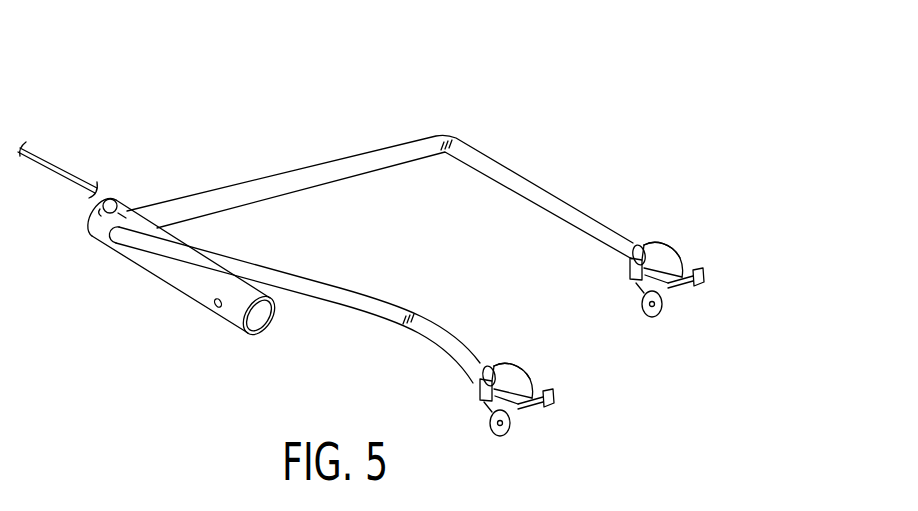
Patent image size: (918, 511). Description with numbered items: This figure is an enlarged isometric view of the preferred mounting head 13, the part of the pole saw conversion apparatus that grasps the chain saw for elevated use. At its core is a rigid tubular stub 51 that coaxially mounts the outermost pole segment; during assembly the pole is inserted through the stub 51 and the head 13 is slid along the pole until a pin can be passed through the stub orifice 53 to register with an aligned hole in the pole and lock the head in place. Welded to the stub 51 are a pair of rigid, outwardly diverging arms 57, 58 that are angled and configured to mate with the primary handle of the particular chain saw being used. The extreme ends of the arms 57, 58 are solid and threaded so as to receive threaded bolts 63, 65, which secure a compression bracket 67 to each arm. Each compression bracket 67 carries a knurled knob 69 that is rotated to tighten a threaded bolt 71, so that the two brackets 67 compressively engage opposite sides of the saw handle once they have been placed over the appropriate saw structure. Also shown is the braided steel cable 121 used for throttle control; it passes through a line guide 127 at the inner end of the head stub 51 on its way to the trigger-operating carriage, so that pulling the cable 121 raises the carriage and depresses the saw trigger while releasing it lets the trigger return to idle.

The mounting head 13 is at (493, 142).
The tubular stub 51 is at (137, 267).
The stub orifice 53 is at (222, 307).
The projecting arm 57 is at (345, 158).
The projecting arm 58 is at (327, 303).
The threaded bolt 63 is at (466, 365).
The threaded bolt 65 is at (633, 244).
The compression bracket 67 is at (515, 372).
The knurled knob 69 is at (495, 433).
The threaded bolt 71 is at (556, 394).
The braided steel cable 121 is at (62, 162).
The line guide 127 is at (115, 200).